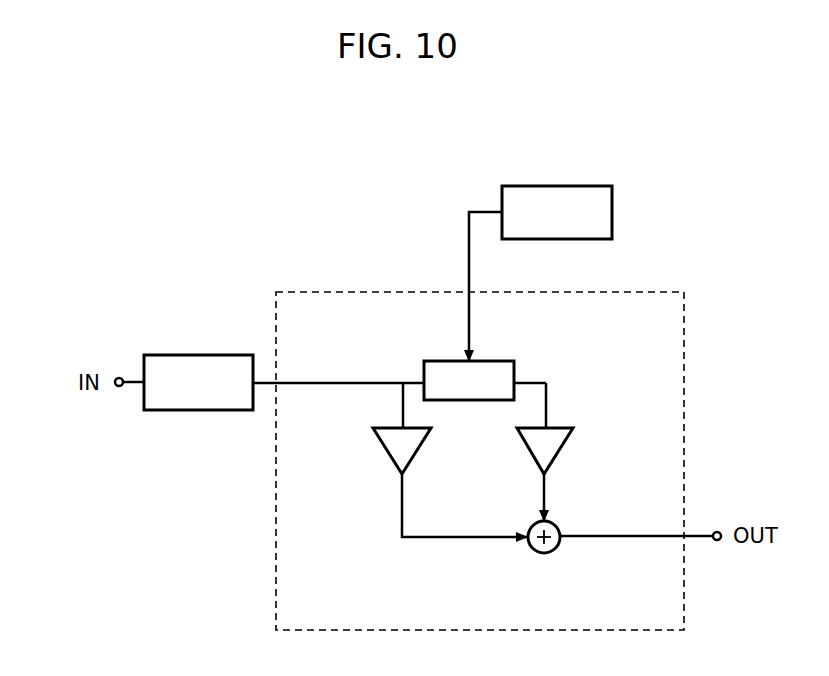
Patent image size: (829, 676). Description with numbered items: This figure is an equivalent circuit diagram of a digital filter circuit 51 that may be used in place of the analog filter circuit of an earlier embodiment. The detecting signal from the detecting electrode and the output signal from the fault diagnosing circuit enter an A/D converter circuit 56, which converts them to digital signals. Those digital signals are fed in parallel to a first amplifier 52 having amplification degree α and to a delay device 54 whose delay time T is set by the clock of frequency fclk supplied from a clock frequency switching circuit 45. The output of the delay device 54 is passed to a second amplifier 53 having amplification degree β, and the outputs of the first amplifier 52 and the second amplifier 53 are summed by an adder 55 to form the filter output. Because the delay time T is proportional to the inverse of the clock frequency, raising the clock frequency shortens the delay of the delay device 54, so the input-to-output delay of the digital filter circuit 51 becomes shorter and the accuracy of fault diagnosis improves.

The clock frequency switching circuit 45 is at (574, 186).
The digital filter circuit 51 is at (623, 290).
The first amplifier 52 is at (388, 455).
The second amplifier 53 is at (560, 425).
The delay device 54 is at (487, 361).
The adder 55 is at (552, 550).
The A/D converter circuit 56 is at (186, 410).